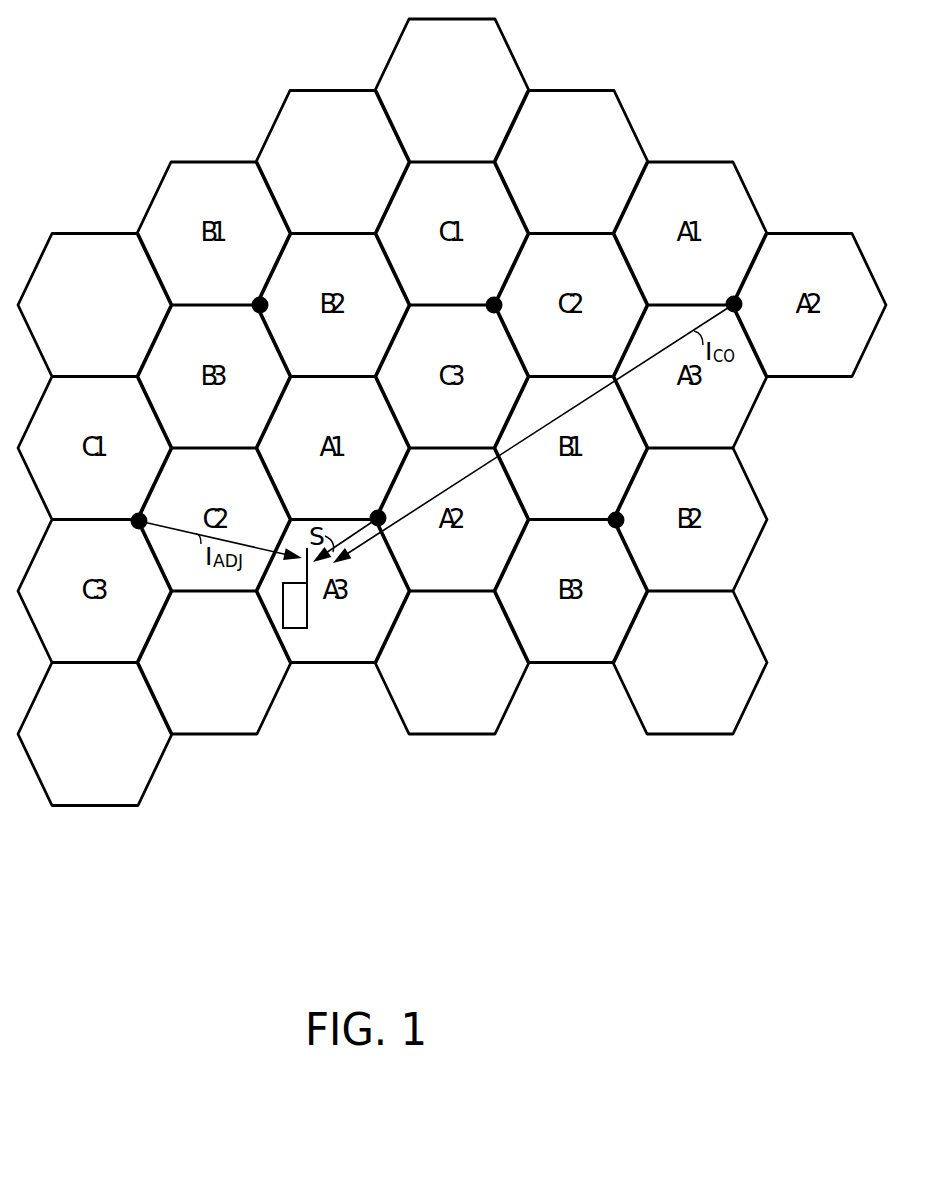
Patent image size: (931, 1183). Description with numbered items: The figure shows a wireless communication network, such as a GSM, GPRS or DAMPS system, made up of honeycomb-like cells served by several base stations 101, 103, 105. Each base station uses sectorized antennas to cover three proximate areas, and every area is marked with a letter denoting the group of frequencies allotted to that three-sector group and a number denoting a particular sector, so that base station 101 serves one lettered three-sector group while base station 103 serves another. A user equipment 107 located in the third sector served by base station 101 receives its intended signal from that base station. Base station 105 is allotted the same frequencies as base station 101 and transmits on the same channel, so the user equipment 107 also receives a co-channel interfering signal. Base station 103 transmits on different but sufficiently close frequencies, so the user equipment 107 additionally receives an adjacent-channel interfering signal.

The base station 101 is at (388, 513).
The base station 103 is at (149, 514).
The base station 105 is at (746, 300).
The user equipment 107 is at (308, 612).